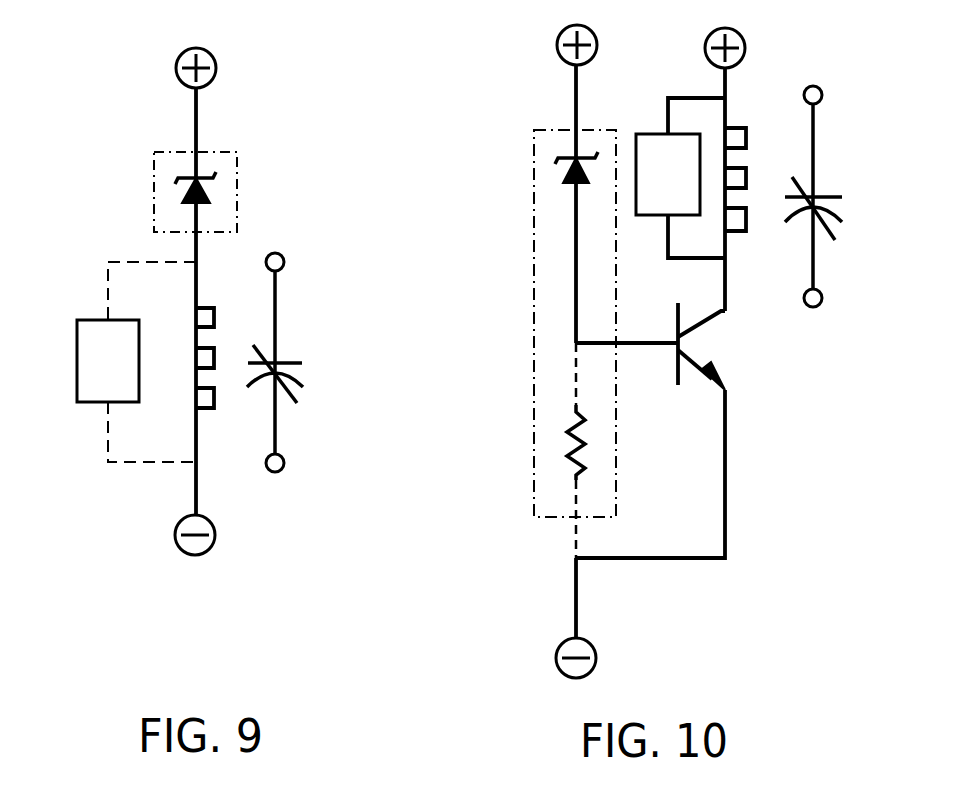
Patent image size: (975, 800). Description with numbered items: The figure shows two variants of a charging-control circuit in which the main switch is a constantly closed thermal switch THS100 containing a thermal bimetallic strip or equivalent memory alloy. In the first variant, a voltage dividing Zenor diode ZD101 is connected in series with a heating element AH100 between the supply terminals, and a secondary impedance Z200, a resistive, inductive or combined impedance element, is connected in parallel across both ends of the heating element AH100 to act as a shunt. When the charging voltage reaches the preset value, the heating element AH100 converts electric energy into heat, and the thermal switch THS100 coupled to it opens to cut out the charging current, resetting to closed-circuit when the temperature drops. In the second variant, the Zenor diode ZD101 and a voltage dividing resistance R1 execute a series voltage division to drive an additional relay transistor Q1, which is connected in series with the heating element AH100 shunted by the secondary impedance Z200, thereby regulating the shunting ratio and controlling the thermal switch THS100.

In FIG. 9, the voltage dividing Zenor diode ZD101 is at (205, 192).
In FIG. 10, the voltage dividing Zenor diode ZD101 is at (575, 158).
In FIG. 9, the secondary impedance Z200 is at (136, 362).
In FIG. 10, the secondary impedance Z200 is at (680, 178).
In FIG. 9, the heating element AH100 is at (214, 412).
In FIG. 10, the heating element AH100 is at (746, 217).
In FIG. 9, the constantly closed thermal switch THS100 is at (300, 388).
In FIG. 10, the constantly closed thermal switch THS100 is at (838, 227).
In FIG. 10, the voltage dividing resistance R1 is at (568, 453).
In FIG. 10, the relay transistor Q1 is at (700, 372).